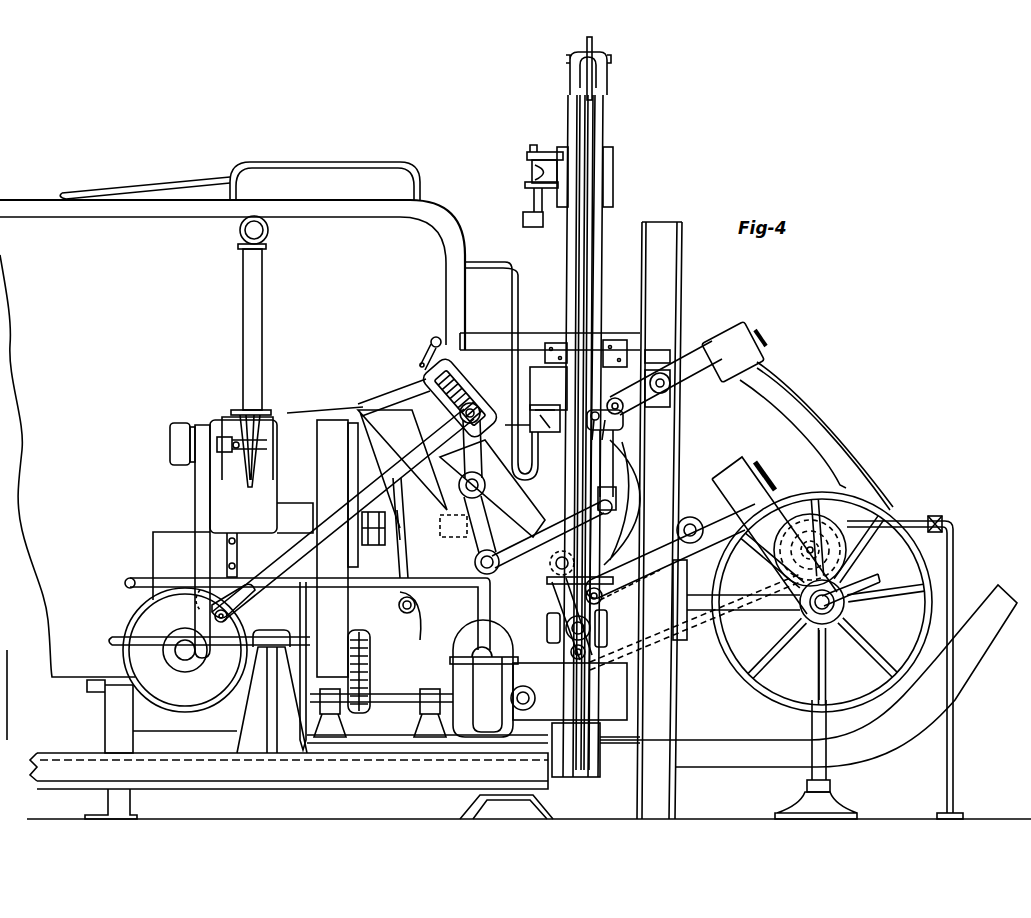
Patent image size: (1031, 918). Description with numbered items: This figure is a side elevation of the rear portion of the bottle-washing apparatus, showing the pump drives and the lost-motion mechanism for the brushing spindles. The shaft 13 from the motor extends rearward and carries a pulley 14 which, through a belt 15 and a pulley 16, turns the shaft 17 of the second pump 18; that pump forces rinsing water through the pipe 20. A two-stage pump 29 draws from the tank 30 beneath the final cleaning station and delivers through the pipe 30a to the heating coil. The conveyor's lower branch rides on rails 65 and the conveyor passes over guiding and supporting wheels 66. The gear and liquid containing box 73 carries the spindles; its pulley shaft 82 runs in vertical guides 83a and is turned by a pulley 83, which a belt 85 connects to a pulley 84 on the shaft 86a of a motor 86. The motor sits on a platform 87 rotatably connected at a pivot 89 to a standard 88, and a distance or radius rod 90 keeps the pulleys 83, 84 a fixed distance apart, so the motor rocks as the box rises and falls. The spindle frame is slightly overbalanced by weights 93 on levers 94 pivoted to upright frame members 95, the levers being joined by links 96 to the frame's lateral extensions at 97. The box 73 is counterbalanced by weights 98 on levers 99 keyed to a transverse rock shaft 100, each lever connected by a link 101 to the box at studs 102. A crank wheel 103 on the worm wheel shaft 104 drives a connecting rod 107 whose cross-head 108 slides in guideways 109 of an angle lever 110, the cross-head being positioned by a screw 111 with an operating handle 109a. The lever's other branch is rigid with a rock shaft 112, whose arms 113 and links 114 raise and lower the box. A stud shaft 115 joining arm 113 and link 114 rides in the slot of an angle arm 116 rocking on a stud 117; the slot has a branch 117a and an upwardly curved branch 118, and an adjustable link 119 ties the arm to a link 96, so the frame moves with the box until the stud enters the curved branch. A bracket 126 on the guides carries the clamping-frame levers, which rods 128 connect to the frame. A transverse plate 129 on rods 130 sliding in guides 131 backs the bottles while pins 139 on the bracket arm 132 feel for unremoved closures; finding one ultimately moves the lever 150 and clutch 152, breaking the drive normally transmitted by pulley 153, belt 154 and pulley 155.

The shaft 13 is at (300, 640).
The pulley 14 is at (183, 632).
The belt 15 is at (205, 514).
The pulley 16 is at (214, 425).
The shaft 17 is at (242, 457).
The second pump 18 is at (262, 427).
The pipe 20 is at (265, 312).
The two-stage pump 29 is at (492, 678).
The tank 30 is at (570, 691).
The delivery pipe 30a is at (392, 615).
The rails 65 is at (733, 760).
The guiding and supporting wheels 66 is at (935, 575).
The gear and liquid containing box 73 is at (548, 636).
The shaft 82 is at (574, 657).
The pulley 83 is at (584, 436).
The vertical guides 83a is at (597, 290).
The pulley 84 is at (845, 528).
The belt 85 is at (772, 546).
The motor 86 is at (810, 516).
The shaft 86a is at (820, 553).
The platform 87 is at (855, 588).
The standard 88 is at (832, 650).
The pivot 89 is at (838, 612).
The distance or radius rod 90 is at (772, 578).
The weights 93 is at (733, 351).
The levers 94 is at (690, 372).
The upright frame members 95 is at (659, 520).
The links 96 is at (610, 405).
The pivotal connection 97 is at (632, 468).
The weights 98 is at (742, 468).
The levers 99 is at (706, 500).
The rock shaft 100 is at (686, 538).
The link 101 is at (602, 598).
The studs 102 is at (590, 628).
The crank wheel or disk 103 is at (175, 652).
The worm wheel shaft 104 is at (185, 660).
The connecting rod 107 is at (306, 528).
The cross-head 108 is at (480, 409).
The guideways 109 is at (456, 372).
The operating handle 109a is at (431, 342).
The angle lever 110 is at (489, 458).
The screw 111 is at (426, 391).
The rock shaft 112 is at (460, 484).
The arms 113 is at (510, 510).
The links 114 is at (560, 602).
The stud shaft 115 is at (558, 586).
The angle arm 116 is at (486, 586).
The stud 117 is at (476, 566).
The branch 117a is at (630, 576).
The branch 118 is at (622, 506).
The adjustable link 119 is at (615, 444).
The bracket 126 is at (607, 65).
The rods 128 is at (590, 234).
The plate 129 is at (538, 228).
The rods 130 is at (526, 178).
The guides 131 is at (545, 150).
The bracket arm 132 is at (541, 404).
The pins 139 is at (540, 335).
The lever 150 is at (396, 552).
The clutch 152 is at (400, 520).
The pulley 153 is at (362, 495).
The belt 154 is at (331, 425).
The pulley 155 is at (356, 636).